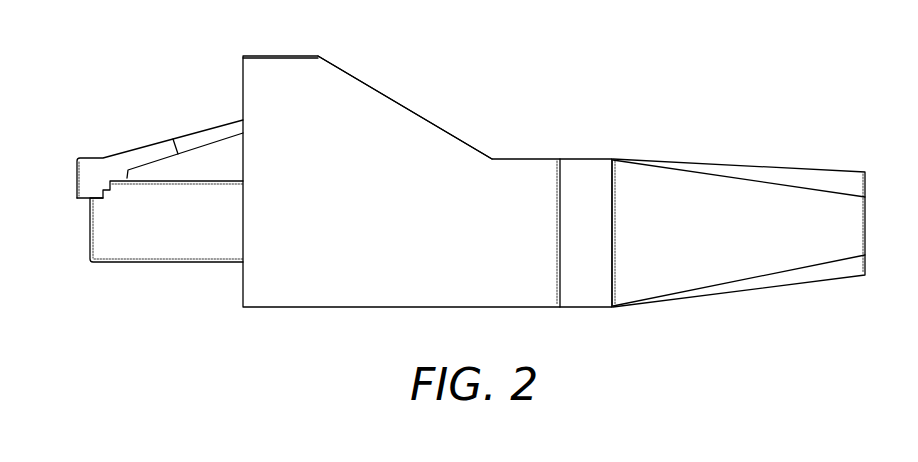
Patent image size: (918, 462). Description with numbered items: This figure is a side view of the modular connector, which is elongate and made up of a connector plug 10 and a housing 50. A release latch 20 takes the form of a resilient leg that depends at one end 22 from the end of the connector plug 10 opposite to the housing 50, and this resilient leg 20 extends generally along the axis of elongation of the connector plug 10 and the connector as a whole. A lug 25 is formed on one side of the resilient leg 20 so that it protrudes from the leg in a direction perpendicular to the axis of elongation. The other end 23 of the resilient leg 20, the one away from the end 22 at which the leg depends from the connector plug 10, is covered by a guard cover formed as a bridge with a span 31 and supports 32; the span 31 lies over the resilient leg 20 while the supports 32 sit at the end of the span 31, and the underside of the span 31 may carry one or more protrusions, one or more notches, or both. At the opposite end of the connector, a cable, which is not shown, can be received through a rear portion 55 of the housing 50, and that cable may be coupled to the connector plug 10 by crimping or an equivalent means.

The connector plug 10 is at (88, 245).
The release latch 20 is at (152, 134).
The end of the leg 22 is at (113, 167).
The end of the resilient leg 23 is at (213, 132).
The lug 25 is at (165, 143).
The span 31 is at (283, 53).
The supports 32 is at (333, 116).
The housing 50 is at (447, 147).
The rear portion 55 is at (712, 190).